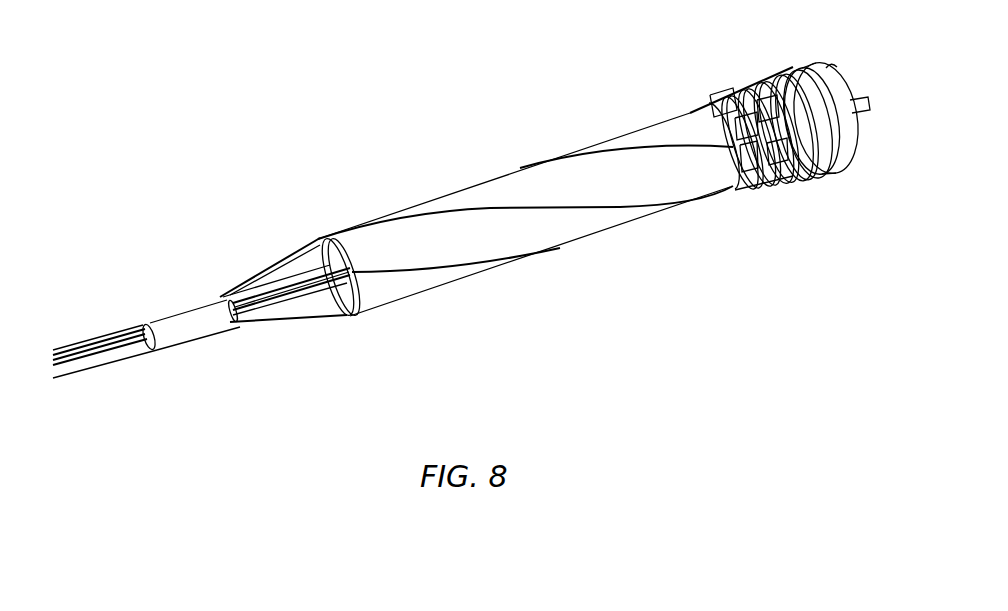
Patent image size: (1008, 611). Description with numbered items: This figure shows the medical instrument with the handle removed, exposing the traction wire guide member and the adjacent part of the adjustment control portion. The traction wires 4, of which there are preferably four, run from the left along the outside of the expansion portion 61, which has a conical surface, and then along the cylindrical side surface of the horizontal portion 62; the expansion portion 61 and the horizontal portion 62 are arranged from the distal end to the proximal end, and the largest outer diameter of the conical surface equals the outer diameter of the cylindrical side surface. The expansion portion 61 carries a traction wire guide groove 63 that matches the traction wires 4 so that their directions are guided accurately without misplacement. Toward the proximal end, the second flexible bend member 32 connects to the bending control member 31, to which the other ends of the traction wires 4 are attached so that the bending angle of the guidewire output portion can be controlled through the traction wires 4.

The traction wire 4 is at (118, 333).
The expansion portion 61 is at (334, 268).
The horizontal portion 62 is at (525, 185).
The traction wire guide groove 63 is at (311, 287).
The second flexible bend member 32 is at (772, 155).
The bending control member 31 is at (847, 147).